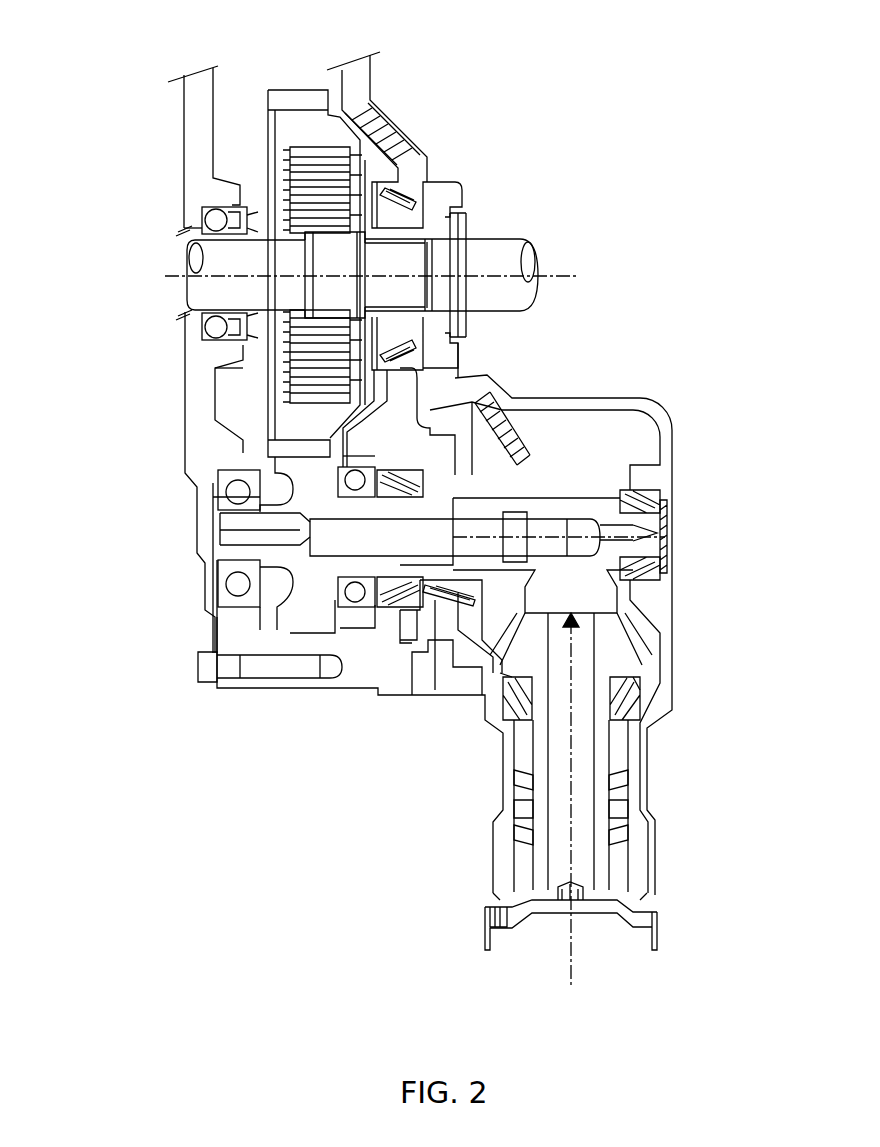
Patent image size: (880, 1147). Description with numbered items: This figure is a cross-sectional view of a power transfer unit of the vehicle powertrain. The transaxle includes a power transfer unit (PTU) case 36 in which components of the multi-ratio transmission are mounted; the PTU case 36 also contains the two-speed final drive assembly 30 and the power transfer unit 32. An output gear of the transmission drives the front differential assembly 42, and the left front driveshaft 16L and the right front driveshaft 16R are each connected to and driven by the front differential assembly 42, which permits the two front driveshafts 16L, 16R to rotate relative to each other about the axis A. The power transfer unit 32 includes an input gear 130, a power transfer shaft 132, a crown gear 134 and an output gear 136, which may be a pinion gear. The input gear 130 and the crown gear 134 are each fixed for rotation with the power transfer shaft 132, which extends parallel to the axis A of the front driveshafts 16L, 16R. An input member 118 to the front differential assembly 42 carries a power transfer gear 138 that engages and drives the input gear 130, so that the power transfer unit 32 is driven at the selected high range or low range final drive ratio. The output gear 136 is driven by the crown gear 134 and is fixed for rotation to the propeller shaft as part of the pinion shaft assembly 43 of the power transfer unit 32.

The two-speed final drive assembly 30 is at (578, 102).
The power transfer unit 32 is at (667, 388).
The power transfer unit case 36 is at (183, 113).
The front differential assembly 42 is at (350, 128).
The pinion shaft assembly 43 is at (595, 753).
The input member 118 is at (306, 133).
The power transfer gear 138 is at (318, 137).
The left front driveshaft 16L is at (186, 290).
The right front driveshaft 16R is at (507, 240).
The axis A is at (570, 277).
The input gear 130 is at (293, 587).
The power transfer shaft 132 is at (593, 497).
The crown gear 134 is at (495, 465).
The output gear 136 is at (628, 643).